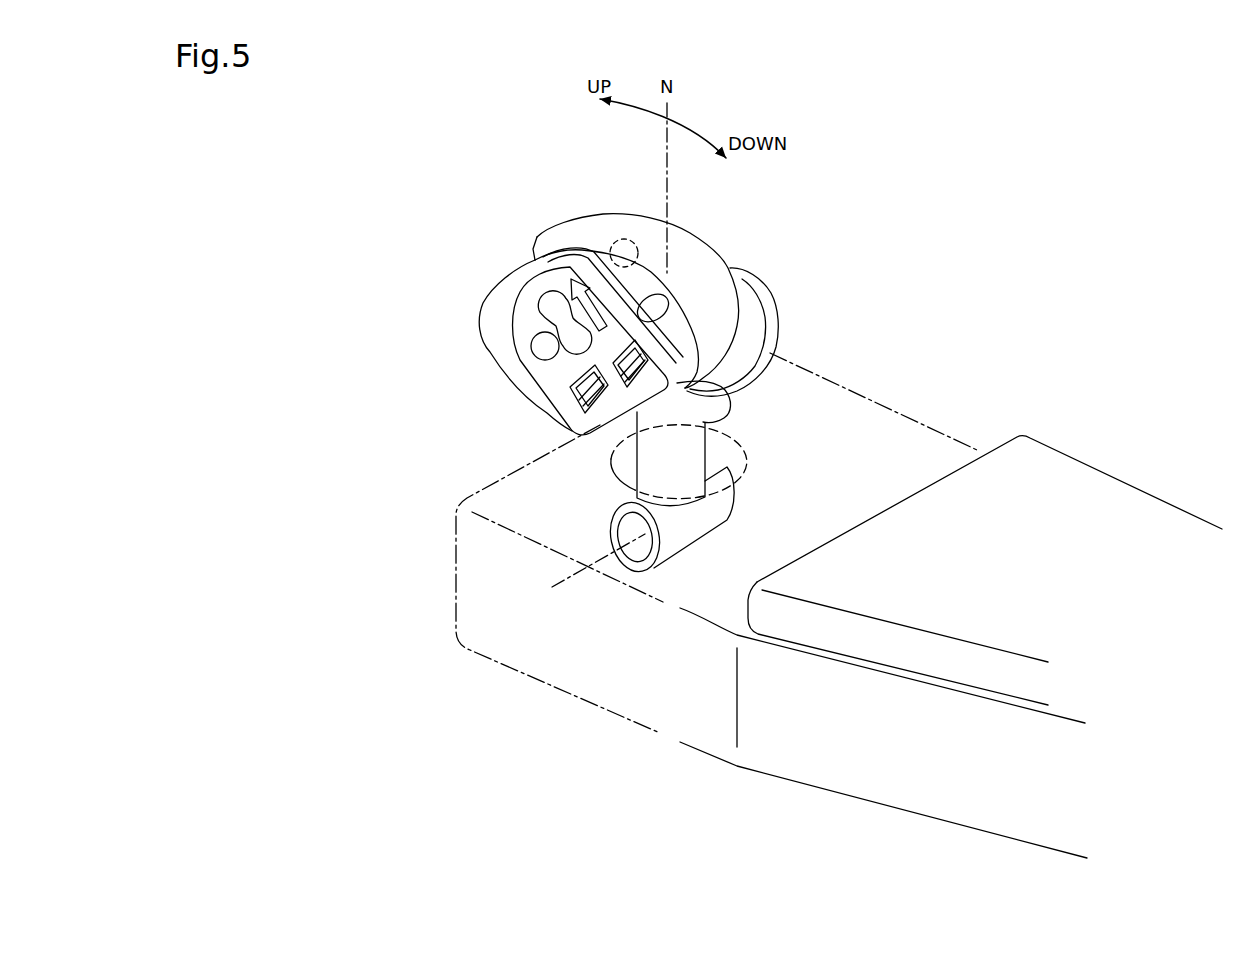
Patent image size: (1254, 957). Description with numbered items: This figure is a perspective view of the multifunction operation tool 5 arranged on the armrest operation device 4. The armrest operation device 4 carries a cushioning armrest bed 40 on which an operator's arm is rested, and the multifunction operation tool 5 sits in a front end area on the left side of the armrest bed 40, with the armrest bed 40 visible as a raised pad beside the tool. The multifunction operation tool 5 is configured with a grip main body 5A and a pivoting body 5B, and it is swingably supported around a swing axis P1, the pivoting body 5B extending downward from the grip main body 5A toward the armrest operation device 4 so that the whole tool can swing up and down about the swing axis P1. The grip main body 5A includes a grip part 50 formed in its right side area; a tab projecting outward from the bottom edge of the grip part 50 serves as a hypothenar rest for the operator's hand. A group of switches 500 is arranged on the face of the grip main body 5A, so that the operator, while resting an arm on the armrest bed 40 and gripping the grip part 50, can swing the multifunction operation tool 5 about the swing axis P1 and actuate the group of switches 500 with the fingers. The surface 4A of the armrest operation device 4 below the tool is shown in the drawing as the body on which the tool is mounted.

The armrest operation device 4 is at (1047, 373).
The front surface of base 4A is at (876, 759).
The armrest bed 40 is at (1119, 500).
The multifunction operation tool 5 is at (430, 212).
The grip part 50 is at (727, 256).
The grip main body 5A is at (778, 340).
The pivoting body 5B is at (710, 444).
The group of switches 500 is at (533, 313).
The swing axis P1 is at (580, 570).